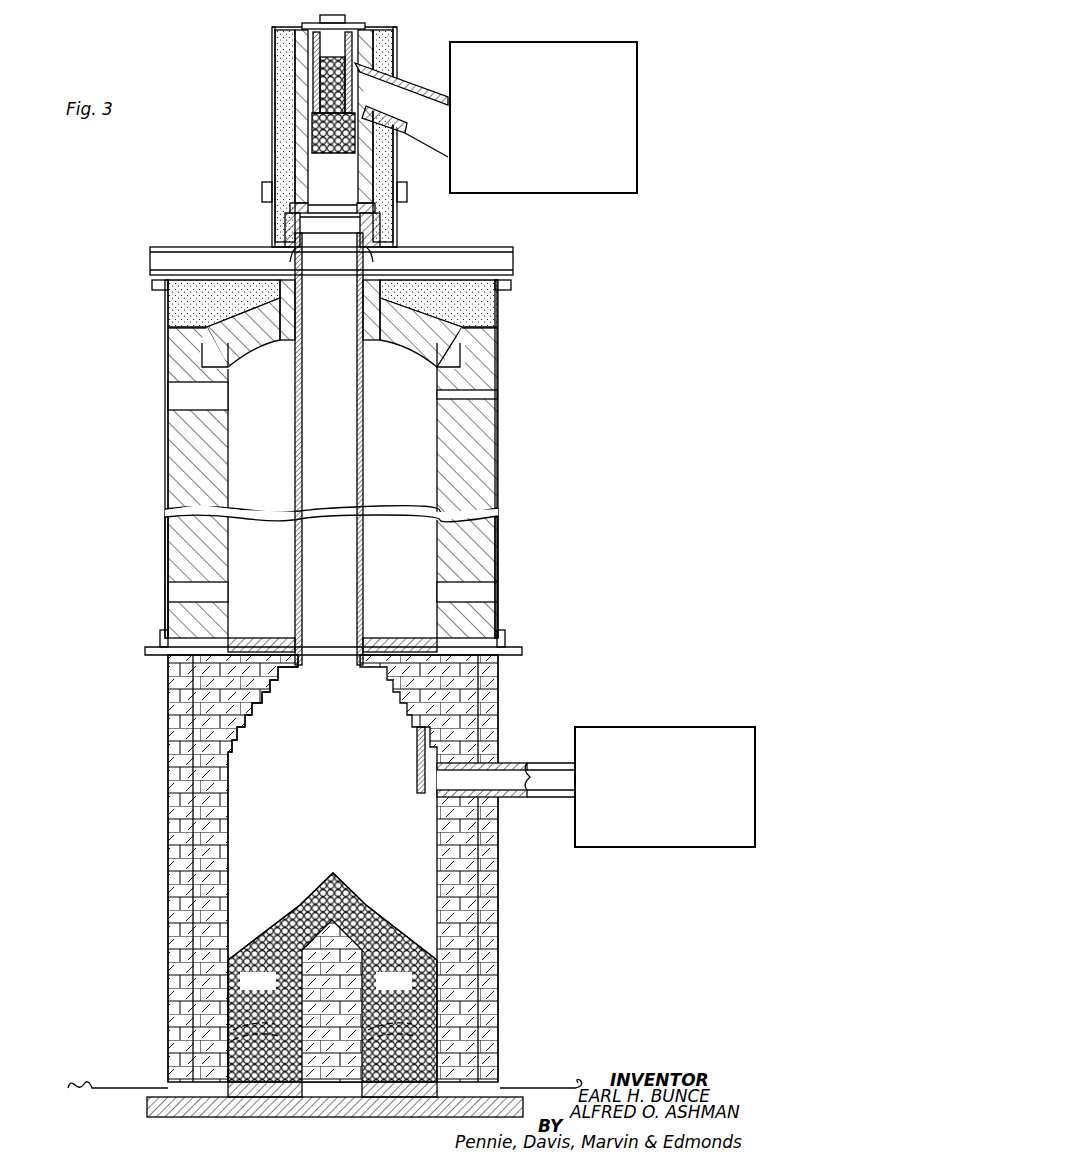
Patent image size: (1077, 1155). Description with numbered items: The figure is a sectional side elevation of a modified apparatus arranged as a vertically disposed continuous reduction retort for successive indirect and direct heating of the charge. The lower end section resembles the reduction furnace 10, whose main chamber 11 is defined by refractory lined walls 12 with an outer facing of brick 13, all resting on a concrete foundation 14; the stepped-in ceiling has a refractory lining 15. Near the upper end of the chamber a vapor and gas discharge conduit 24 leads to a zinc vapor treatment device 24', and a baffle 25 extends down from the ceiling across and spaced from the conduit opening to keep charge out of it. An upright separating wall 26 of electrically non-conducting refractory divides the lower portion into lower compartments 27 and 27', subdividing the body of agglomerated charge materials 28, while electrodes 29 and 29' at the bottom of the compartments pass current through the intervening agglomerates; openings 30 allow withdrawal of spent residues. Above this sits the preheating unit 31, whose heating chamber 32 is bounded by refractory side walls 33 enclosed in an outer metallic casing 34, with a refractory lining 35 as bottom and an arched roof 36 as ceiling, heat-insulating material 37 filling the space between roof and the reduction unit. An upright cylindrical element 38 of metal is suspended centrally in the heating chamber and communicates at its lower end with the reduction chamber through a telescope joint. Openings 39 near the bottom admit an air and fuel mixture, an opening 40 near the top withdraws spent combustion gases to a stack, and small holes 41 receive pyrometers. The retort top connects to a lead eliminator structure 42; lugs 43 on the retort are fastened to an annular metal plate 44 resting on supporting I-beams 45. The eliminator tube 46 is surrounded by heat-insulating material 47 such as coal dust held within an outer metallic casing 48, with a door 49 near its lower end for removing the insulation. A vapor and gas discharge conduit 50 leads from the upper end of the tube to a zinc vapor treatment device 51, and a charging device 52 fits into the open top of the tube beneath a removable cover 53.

The reduction furnace 10 is at (198, 885).
The main chamber 11 is at (332, 800).
The refractory lined walls 12 is at (226, 831).
The outer facing of brick 13 is at (172, 820).
The concrete foundation 14 is at (165, 1112).
The refractory lining 15 is at (248, 722).
The vapor and gas discharge conduit 24 is at (506, 798).
The zinc vapor treatment device 24' is at (665, 804).
The baffle 25 is at (415, 779).
The separating wall 26 is at (385, 912).
The lower compartment 27 is at (258, 982).
The lower compartment 27' is at (394, 982).
The agglomerated charge materials 28 is at (331, 872).
The electrode 29 is at (265, 1113).
The electrode 29' is at (399, 1113).
The openings 30 is at (232, 1025).
The preheating unit 31 is at (183, 467).
The heating chamber 32 is at (261, 502).
The side walls 33 is at (215, 497).
The outer metallic casing 34 is at (165, 539).
The refractory lining 35 is at (272, 622).
The arched roof 36 is at (256, 342).
The heat-insulating material 37 is at (188, 309).
The upright cylindrical element 38 is at (364, 423).
The openings 39 is at (175, 592).
The opening 40 is at (172, 395).
The holes 41 is at (499, 394).
The lead eliminator structure 42 is at (276, 155).
The lugs 43 is at (384, 250).
The annular metal plate 44 is at (400, 246).
The supporting I-beams 45 is at (514, 257).
The eliminator tube 46 is at (310, 183).
The heat-insulating material 47 is at (288, 118).
The outer metallic casing 48 is at (272, 56).
The door 49 is at (264, 193).
The vapor and gas discharge conduit 50 is at (424, 133).
The zinc vapor treatment device 51 is at (581, 184).
The charging device 52 is at (343, 50).
The removable cover 53 is at (364, 25).